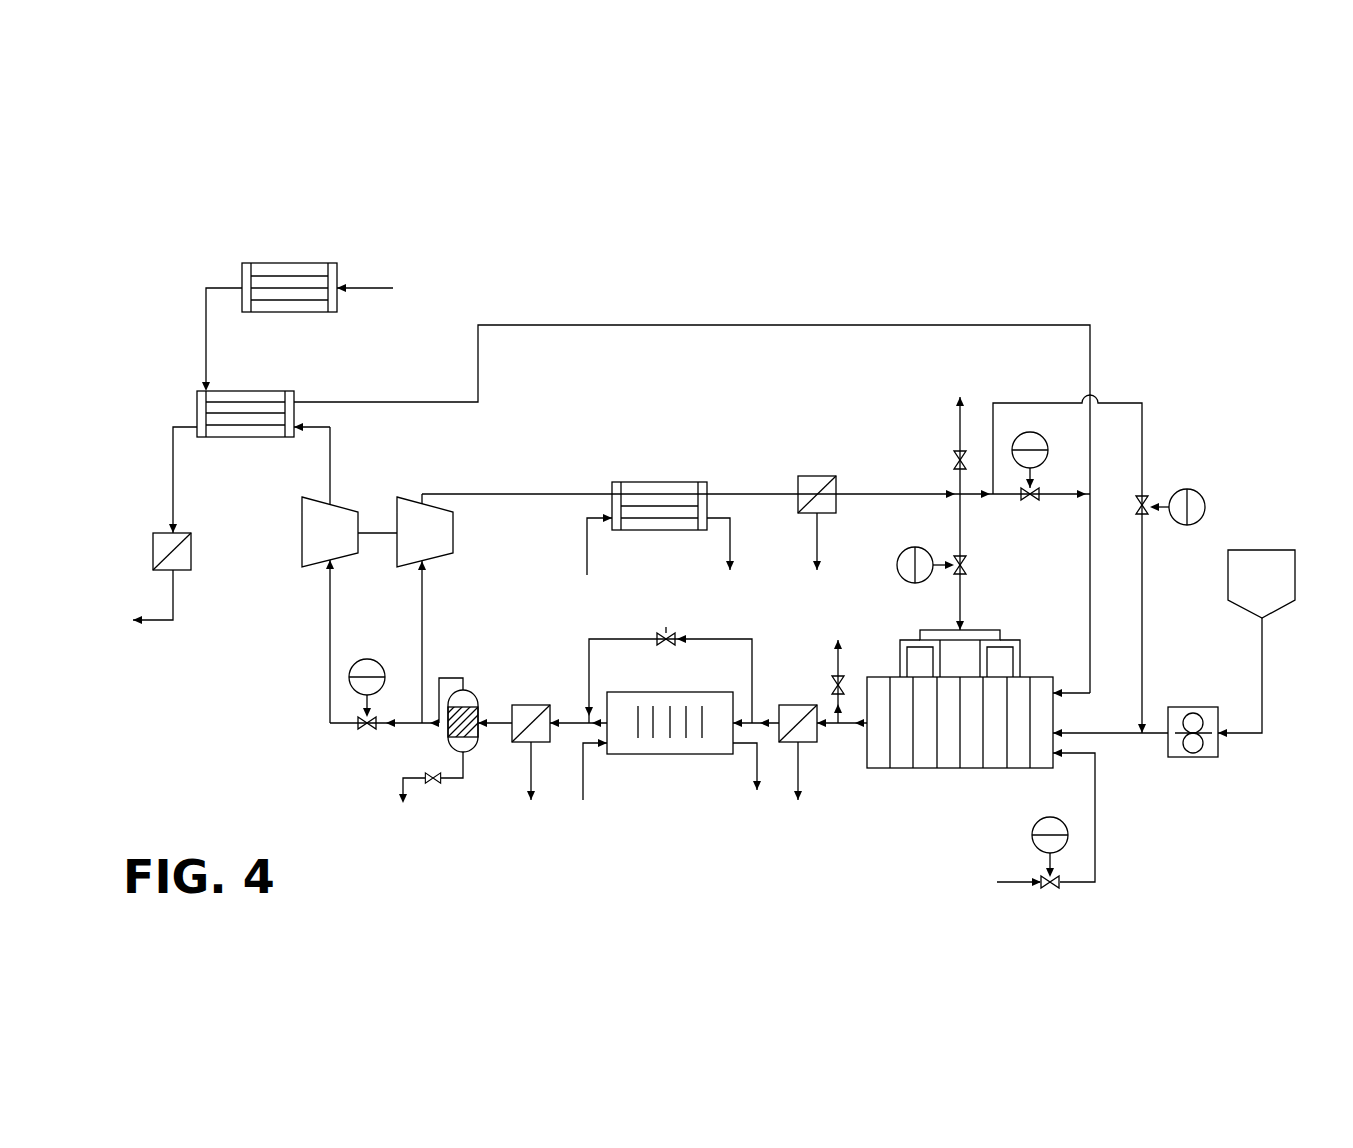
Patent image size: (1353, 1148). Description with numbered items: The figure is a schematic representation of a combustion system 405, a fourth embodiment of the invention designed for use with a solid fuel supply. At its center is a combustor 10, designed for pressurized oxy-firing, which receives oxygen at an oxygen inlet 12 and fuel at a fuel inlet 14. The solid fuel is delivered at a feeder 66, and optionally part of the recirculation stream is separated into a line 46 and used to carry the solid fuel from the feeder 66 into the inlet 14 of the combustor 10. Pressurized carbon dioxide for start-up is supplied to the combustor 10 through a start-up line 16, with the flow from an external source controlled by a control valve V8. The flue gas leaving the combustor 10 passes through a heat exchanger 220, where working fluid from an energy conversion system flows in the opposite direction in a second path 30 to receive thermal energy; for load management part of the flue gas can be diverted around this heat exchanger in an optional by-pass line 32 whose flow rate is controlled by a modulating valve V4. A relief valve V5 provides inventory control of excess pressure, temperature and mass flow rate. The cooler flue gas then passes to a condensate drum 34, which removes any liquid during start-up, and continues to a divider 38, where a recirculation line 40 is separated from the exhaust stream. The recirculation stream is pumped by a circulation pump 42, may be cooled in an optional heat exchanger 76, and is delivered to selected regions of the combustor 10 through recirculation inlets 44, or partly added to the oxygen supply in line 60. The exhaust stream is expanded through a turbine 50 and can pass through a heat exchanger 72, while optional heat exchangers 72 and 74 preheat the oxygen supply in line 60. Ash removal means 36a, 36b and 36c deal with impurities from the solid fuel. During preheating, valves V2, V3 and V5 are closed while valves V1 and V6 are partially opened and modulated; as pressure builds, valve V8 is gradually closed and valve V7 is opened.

The combustion system 405 is at (390, 203).
The heat exchanger 74 is at (290, 263).
The heat exchanger 72 is at (218, 437).
The oxygen supply line 60 is at (608, 325).
The turbine 50 is at (302, 540).
The circulation pump 42 is at (453, 533).
The recirculation line 40 is at (533, 494).
The heat exchanger 76 is at (660, 482).
The ash removal means 36c is at (817, 476).
The valve V6 is at (955, 460).
The valve V3 is at (1030, 500).
The valve V2 is at (966, 565).
The valve V7 is at (1142, 515).
The line 46 is at (1142, 600).
The feeder 66 is at (1193, 757).
The fuel inlet 14 is at (1058, 725).
The oxygen inlet 12 is at (1058, 692).
The combustor 10 is at (960, 768).
The recirculation inlets 44 is at (1000, 632).
The start-up line 16 is at (1095, 815).
The control valve V8 is at (1045, 878).
The ash removal means 36a is at (818, 742).
The relief valve V5 is at (833, 685).
The second path 30 is at (587, 745).
The heat exchanger 220 is at (665, 754).
The by-pass line 32 is at (589, 639).
The modulating valve V4 is at (660, 635).
The ash removal means 36b is at (531, 705).
The condensate drum 34 is at (470, 752).
The divider 38 is at (420, 723).
The valve V1 is at (367, 730).